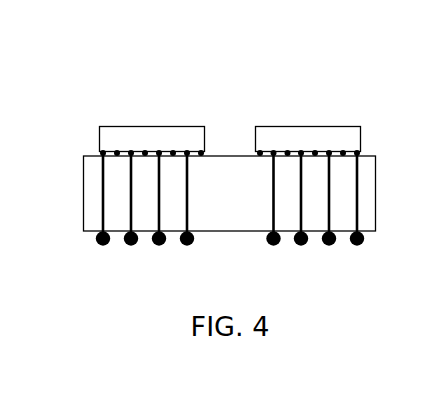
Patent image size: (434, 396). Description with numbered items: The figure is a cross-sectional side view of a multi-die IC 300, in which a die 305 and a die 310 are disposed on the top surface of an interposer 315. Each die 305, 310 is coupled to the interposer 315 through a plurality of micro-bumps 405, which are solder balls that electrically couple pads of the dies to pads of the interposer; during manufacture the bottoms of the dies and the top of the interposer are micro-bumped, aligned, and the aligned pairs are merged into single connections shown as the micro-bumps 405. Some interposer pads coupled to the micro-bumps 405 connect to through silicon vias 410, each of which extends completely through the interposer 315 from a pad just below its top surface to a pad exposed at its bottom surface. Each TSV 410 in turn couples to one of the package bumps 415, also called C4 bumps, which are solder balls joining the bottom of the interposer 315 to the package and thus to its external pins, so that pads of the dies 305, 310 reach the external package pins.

The multi-die IC 300 is at (215, 90).
The die 305 is at (152, 139).
The die 310 is at (308, 139).
The interposer 315 is at (217, 201).
The micro-bumps 405 is at (101, 152).
The through silicon vias (TSVs) 410 is at (102, 201).
The package bumps 415 is at (331, 246).